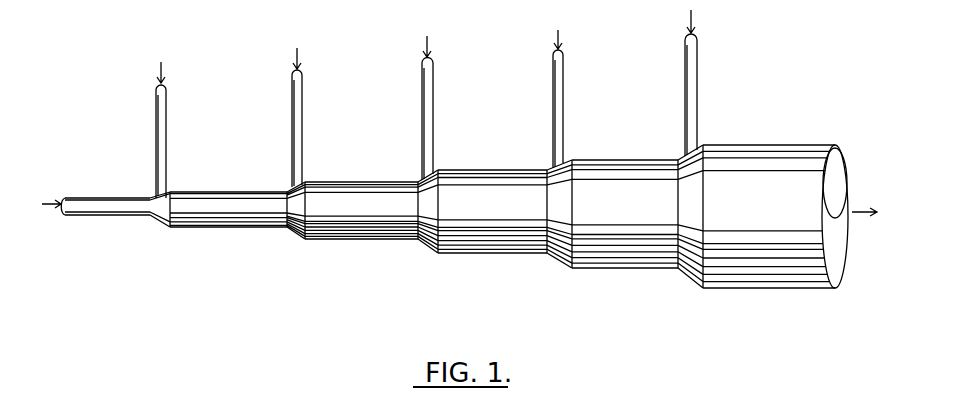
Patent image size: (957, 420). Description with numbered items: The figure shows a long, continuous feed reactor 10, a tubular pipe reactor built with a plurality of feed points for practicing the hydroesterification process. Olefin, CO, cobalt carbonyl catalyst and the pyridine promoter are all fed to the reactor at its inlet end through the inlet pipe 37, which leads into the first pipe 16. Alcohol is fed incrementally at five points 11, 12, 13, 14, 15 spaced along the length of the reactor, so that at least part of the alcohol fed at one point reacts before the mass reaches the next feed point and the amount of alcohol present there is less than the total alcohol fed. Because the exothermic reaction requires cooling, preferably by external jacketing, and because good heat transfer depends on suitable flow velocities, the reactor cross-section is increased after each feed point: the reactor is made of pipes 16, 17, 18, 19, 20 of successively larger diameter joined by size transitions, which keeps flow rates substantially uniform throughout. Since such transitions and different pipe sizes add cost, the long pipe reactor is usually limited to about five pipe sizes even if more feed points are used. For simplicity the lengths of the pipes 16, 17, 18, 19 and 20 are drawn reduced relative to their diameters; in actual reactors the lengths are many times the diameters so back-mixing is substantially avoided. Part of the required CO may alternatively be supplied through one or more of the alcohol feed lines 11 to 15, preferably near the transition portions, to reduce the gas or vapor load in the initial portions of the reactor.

The long continuous feed reactor 10 is at (369, 303).
The alcohol feed point 11 is at (162, 136).
The alcohol feed point 12 is at (301, 124).
The alcohol feed point 13 is at (433, 105).
The alcohol feed point 14 is at (560, 93).
The alcohol feed point 15 is at (690, 85).
The pipe 16 is at (233, 208).
The pipe 17 is at (366, 222).
The pipe 18 is at (487, 228).
The pipe 19 is at (618, 238).
The pipe 20 is at (758, 255).
The inlet pipe 37 is at (119, 204).